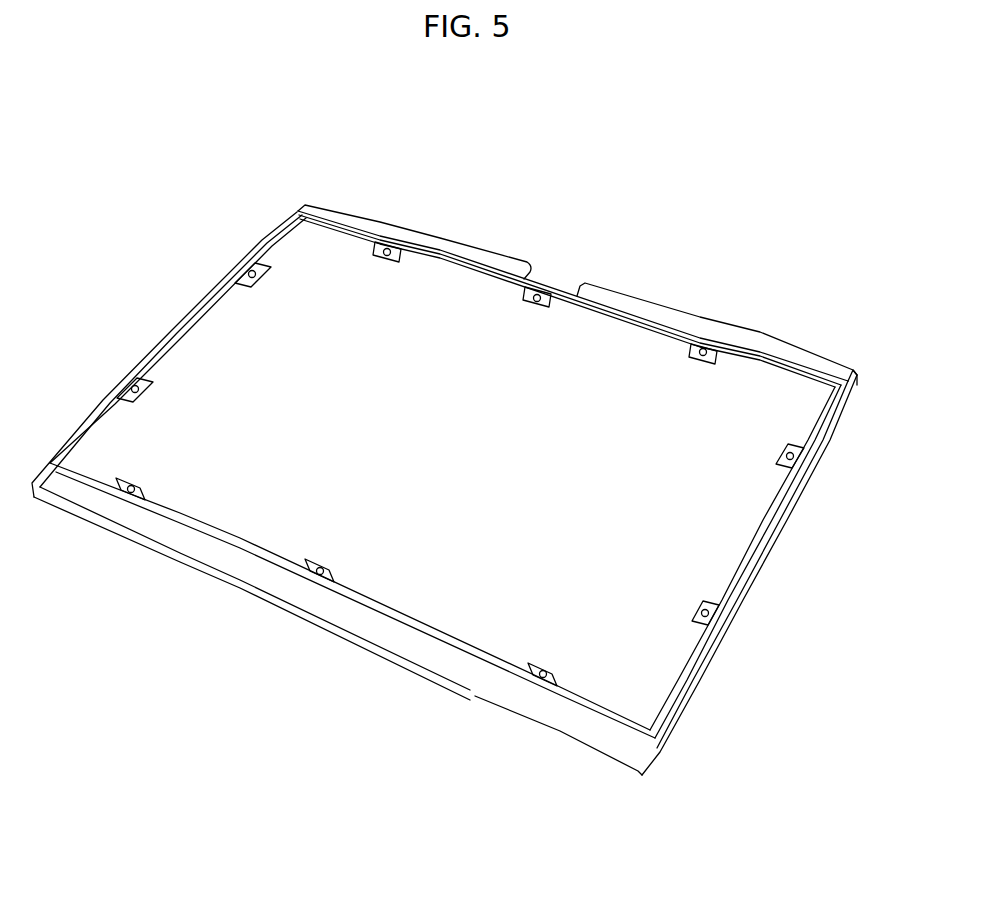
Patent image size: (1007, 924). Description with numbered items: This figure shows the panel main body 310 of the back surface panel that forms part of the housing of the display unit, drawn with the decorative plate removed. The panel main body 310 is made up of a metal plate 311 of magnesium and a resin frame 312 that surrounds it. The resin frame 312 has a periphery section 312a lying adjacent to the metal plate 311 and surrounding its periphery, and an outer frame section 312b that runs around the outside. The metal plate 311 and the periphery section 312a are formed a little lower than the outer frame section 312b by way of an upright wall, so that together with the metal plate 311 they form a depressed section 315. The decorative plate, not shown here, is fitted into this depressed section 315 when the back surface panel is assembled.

The panel main body 310 is at (716, 283).
The metal plate 311 is at (730, 412).
The resin frame 312 is at (825, 412).
The periphery section 312a is at (798, 460).
The outer frame section 312b is at (860, 373).
The depressed section 315 is at (703, 393).